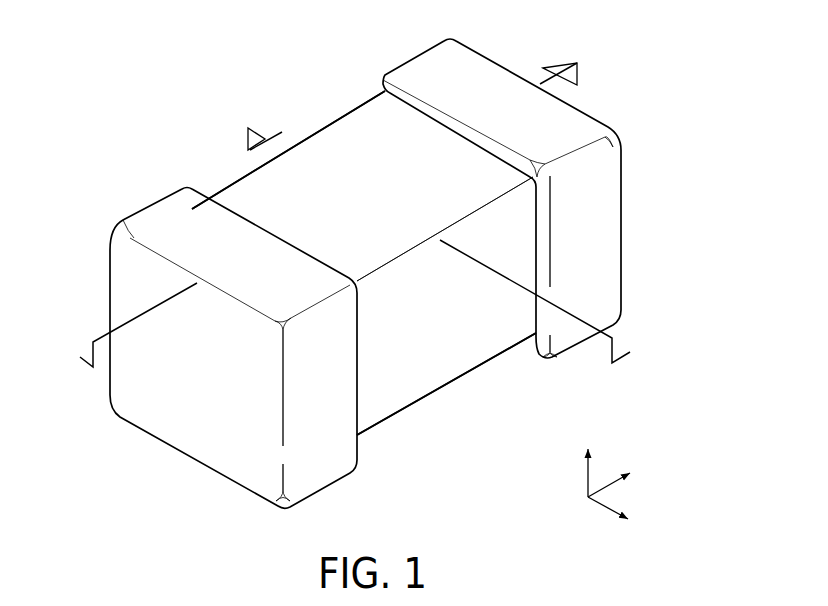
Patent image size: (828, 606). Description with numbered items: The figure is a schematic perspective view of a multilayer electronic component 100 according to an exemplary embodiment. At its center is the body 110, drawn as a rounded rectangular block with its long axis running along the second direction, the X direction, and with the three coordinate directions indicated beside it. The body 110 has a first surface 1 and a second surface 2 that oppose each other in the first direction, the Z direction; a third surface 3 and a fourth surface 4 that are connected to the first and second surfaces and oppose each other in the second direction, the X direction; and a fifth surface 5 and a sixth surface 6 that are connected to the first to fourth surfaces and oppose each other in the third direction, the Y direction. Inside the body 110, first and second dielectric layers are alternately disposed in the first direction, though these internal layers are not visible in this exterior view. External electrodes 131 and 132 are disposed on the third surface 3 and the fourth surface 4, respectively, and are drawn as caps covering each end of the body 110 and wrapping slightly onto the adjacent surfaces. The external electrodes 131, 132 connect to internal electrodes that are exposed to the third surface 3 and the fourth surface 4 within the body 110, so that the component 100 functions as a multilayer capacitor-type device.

The multilayer electronic component 100 is at (167, 48).
The body 110 is at (247, 198).
The external electrode 131 is at (167, 216).
The external electrode 132 is at (423, 72).
The first surface 1 is at (407, 360).
The second surface 2 is at (393, 158).
The third surface 3 is at (202, 407).
The fourth surface 4 is at (573, 212).
The fifth surface 5 is at (465, 328).
The sixth surface 6 is at (338, 173).